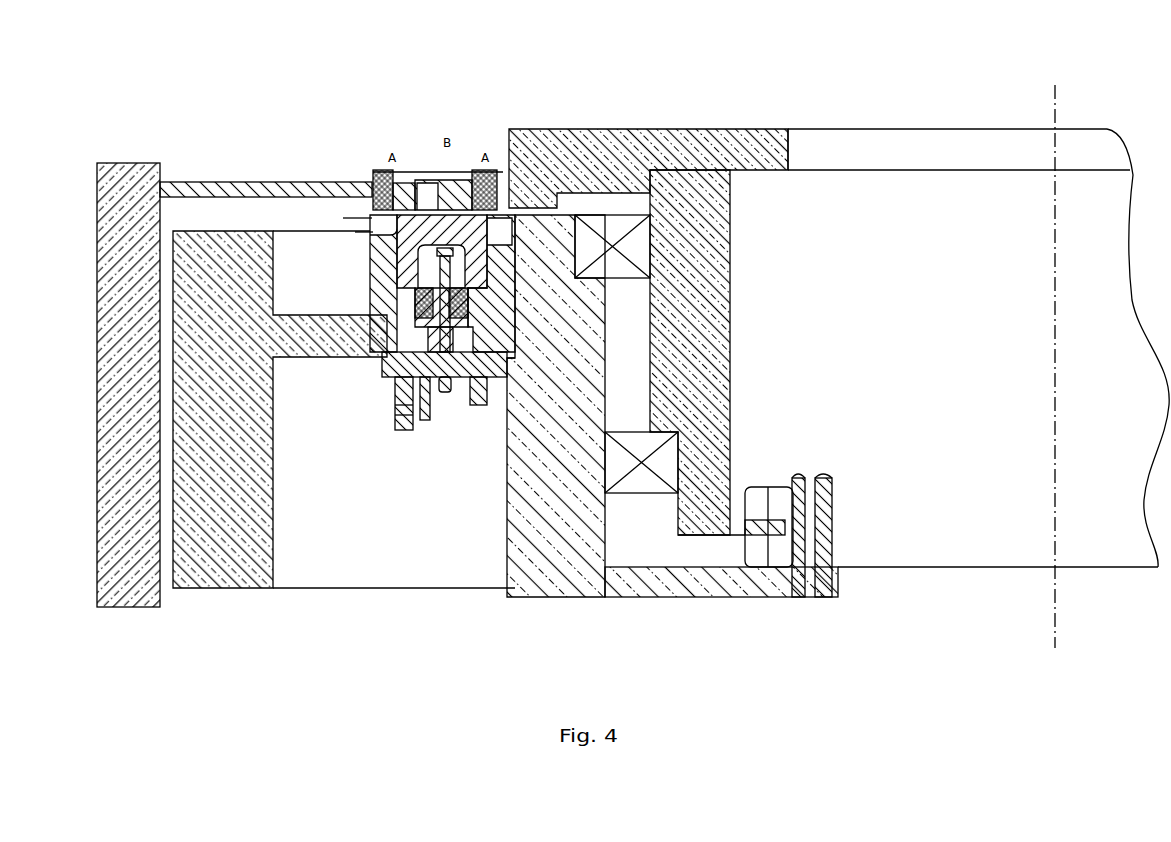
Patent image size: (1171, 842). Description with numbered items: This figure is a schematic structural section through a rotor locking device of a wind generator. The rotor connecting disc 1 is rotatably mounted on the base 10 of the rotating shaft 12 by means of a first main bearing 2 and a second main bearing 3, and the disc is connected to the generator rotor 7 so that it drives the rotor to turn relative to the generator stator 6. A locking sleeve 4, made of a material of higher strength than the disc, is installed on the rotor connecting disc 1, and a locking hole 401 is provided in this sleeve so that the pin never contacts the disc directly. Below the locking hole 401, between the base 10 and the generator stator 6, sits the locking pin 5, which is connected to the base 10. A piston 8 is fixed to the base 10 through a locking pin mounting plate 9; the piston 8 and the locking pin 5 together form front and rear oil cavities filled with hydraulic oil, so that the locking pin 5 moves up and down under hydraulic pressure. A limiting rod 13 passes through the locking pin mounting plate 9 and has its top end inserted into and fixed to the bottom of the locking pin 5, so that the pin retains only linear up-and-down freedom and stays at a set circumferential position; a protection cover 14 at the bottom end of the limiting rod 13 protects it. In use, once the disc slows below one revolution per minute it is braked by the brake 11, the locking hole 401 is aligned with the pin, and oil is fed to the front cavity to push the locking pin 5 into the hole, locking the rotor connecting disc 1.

The rotor connecting disc 1 is at (732, 128).
The first main bearing 2 is at (642, 235).
The second main bearing 3 is at (643, 443).
The locking sleeve 4 is at (490, 172).
The locking hole 401 is at (468, 178).
The locking pin 5 is at (392, 172).
The generator stator 6 is at (225, 330).
The generator rotor 7 is at (121, 215).
The piston 8 is at (387, 340).
The locking pin mounting plate 9 is at (400, 383).
The base 10 is at (578, 385).
The brake 11 is at (773, 502).
The rotating shaft 12 is at (1055, 458).
The limiting rod 13 is at (490, 330).
The protection cover 14 is at (478, 392).